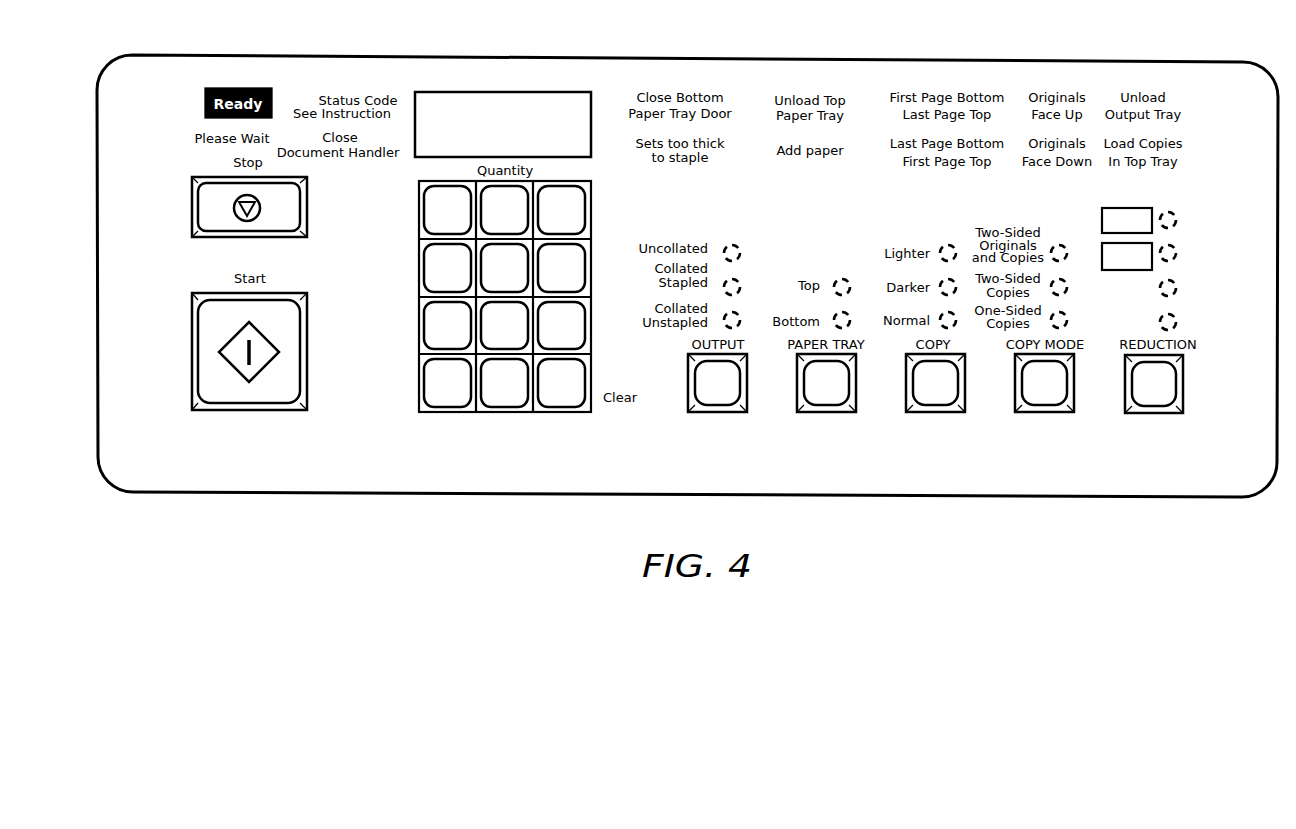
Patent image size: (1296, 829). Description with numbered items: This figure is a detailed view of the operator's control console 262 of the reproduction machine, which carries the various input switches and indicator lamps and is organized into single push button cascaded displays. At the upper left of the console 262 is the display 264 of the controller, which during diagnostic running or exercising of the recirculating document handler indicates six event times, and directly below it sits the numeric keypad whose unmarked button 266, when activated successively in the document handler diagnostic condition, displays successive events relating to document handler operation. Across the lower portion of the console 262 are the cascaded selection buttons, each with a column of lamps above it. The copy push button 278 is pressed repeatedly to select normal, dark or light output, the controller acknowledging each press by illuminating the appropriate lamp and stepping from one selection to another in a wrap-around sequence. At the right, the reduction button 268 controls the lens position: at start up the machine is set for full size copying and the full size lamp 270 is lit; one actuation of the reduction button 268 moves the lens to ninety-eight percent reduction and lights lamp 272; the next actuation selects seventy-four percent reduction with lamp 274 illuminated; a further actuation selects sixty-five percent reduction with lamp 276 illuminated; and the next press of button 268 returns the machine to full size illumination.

The operator's control console 262 is at (660, 67).
The display 264 is at (418, 92).
The unmarked button 266 is at (418, 398).
The reduction button 268 is at (1152, 400).
The full size lamp 270 is at (1180, 325).
The 98% reduction lamp 272 is at (1180, 292).
The 74% reduction lamp 274 is at (1178, 258).
The 65% reduction lamp 276 is at (1178, 225).
The copy push button 278 is at (932, 398).